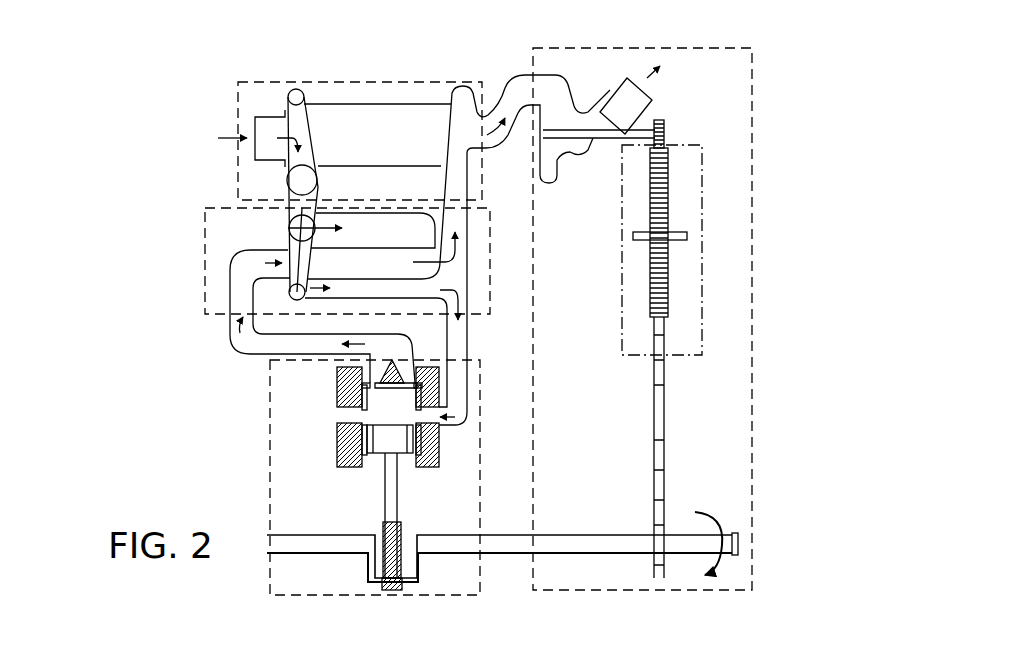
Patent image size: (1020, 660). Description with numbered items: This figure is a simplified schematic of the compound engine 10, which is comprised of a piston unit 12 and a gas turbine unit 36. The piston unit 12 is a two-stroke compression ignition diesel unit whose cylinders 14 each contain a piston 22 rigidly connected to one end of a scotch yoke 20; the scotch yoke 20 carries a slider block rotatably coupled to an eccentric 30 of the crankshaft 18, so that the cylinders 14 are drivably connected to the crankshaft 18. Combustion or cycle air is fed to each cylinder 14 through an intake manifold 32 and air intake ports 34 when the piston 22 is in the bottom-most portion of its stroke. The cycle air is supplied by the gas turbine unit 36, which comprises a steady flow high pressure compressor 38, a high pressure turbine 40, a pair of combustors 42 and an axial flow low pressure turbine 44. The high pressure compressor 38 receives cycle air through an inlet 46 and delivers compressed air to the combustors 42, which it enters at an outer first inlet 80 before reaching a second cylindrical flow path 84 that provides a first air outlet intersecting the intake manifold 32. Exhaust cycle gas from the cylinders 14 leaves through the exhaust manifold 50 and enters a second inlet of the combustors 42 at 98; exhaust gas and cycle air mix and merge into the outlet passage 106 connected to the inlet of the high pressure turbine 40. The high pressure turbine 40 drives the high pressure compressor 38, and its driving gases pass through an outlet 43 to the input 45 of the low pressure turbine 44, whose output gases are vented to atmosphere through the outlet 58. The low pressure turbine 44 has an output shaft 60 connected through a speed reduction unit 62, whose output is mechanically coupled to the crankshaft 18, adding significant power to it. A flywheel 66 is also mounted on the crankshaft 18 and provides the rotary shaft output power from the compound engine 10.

The compound engine 10 is at (190, 450).
The piston unit 12 is at (303, 463).
The cylinders 14 is at (392, 390).
The crankshaft 18 is at (613, 533).
The scotch yoke 20 is at (405, 520).
The piston 22 is at (387, 447).
The eccentric 30 is at (378, 583).
The intake manifold 32 is at (473, 342).
The air intake ports 34 is at (357, 412).
The gas turbine unit 36 is at (307, 76).
The high pressure compressor 38 is at (320, 138).
The high pressure turbine 40 is at (472, 80).
The combustors 42 is at (198, 234).
The outlet 43 is at (503, 80).
The low pressure turbine 44 is at (575, 77).
The input 45 is at (543, 82).
The inlet 46 is at (253, 157).
The exhaust manifold 50 is at (262, 352).
The outlet 58 is at (653, 100).
The output shaft 60 is at (597, 150).
The speed reduction unit 62 is at (703, 240).
The flywheel 66 is at (667, 433).
The outer first inlet 80 is at (305, 290).
The second cylindrical flow path 84 is at (462, 335).
The second inlet 98 is at (282, 252).
The outlet passage 106 is at (460, 238).